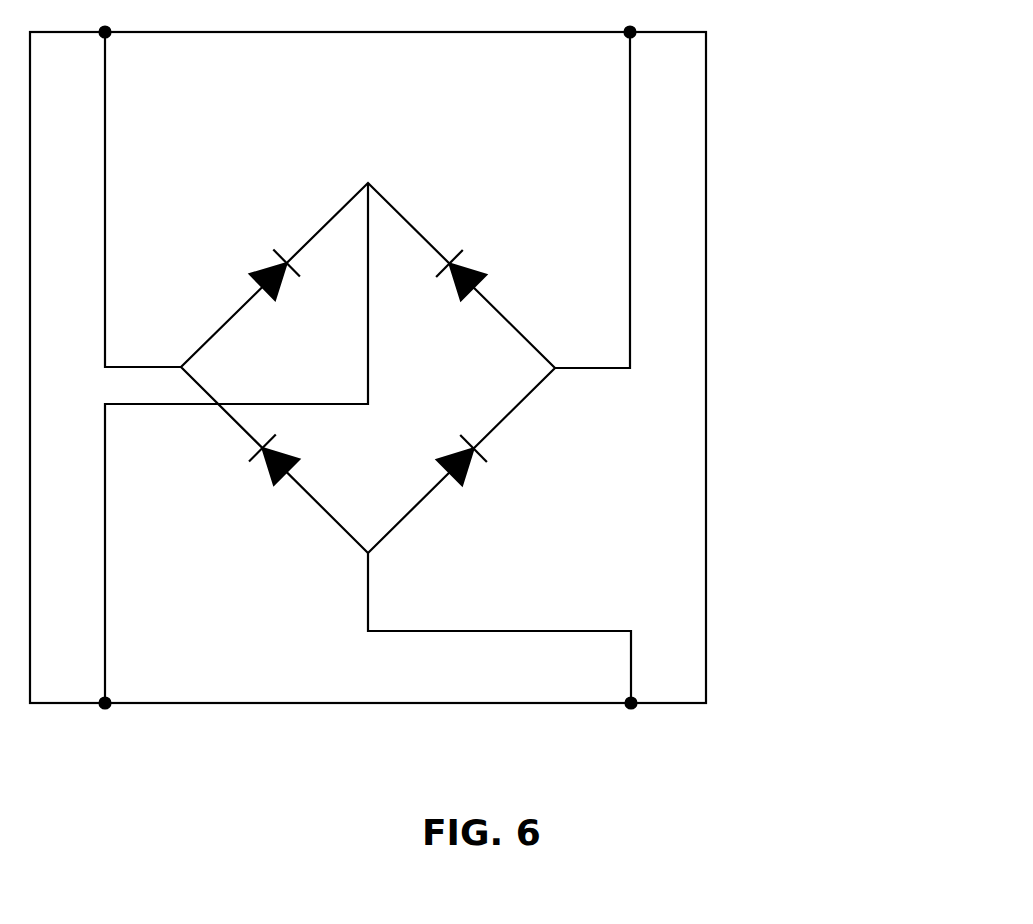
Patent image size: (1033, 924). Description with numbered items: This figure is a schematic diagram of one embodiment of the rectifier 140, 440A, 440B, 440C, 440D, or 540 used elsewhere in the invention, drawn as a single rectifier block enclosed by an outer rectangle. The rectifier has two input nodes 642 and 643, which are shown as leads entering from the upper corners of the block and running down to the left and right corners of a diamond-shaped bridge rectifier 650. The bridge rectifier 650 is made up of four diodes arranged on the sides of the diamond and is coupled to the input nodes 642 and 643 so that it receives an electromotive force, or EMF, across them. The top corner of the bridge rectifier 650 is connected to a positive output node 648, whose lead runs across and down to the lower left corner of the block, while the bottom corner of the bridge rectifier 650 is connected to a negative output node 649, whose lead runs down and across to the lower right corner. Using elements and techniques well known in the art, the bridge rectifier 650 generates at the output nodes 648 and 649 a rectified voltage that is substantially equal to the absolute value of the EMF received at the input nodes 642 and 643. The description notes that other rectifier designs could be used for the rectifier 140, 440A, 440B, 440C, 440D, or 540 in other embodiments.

The rectifier 140 is at (462, 367).
The rectifier 440A is at (462, 367).
The rectifier 440B is at (462, 367).
The rectifier 440C is at (462, 367).
The rectifier 440D is at (462, 367).
The rectifier 540 is at (706, 181).
The input node 642 is at (106, 182).
The input node 643 is at (630, 147).
The positive output node 648 is at (106, 628).
The negative output node 649 is at (442, 631).
The bridge rectifier 650 is at (517, 412).